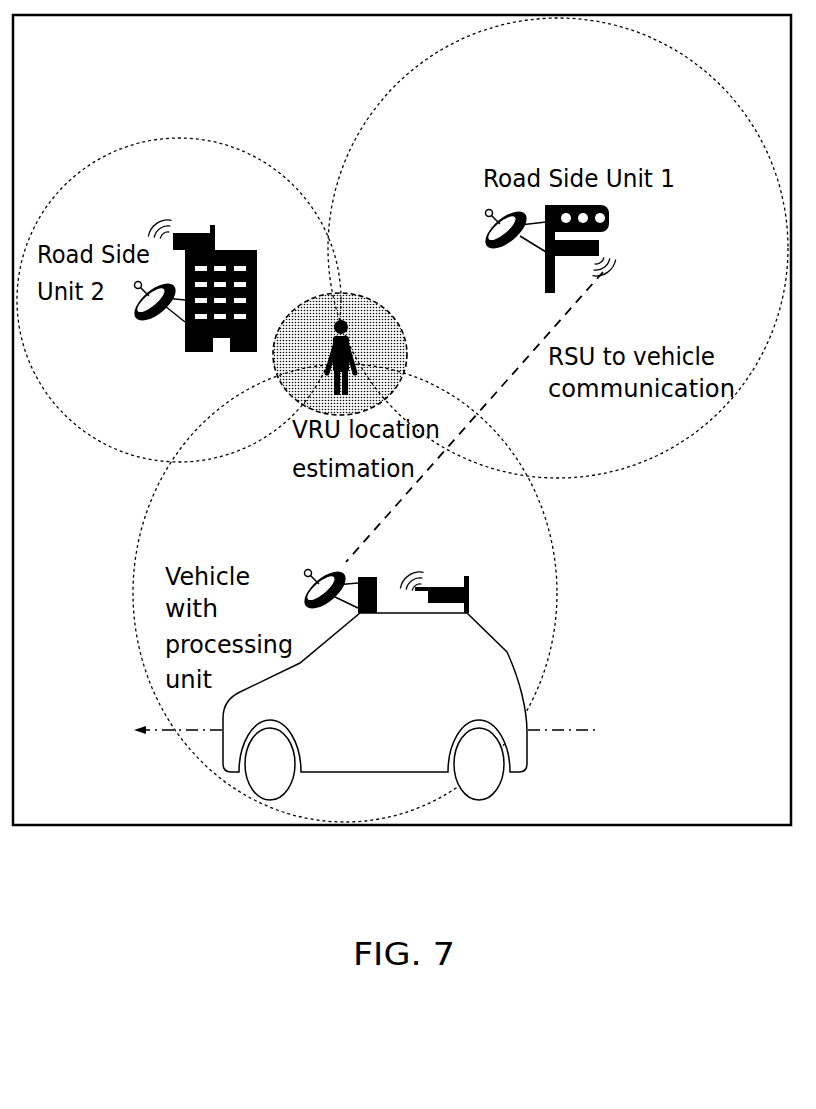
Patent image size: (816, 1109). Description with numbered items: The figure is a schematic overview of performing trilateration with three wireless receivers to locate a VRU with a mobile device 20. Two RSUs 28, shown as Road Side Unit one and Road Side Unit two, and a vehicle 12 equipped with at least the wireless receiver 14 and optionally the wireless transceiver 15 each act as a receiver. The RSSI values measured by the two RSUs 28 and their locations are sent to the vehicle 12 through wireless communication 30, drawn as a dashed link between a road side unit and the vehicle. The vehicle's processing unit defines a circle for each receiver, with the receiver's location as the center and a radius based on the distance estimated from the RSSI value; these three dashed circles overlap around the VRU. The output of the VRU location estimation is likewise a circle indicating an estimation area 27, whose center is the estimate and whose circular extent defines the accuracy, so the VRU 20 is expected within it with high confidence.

The vehicle 12 is at (421, 697).
The wireless receiver 14 is at (381, 571).
The wireless transceiver 15 is at (457, 572).
The VRU with a mobile device 20 is at (364, 323).
The estimation area 27 is at (407, 328).
The RSUs 28 is at (468, 177).
The wireless communication 30 is at (521, 402).